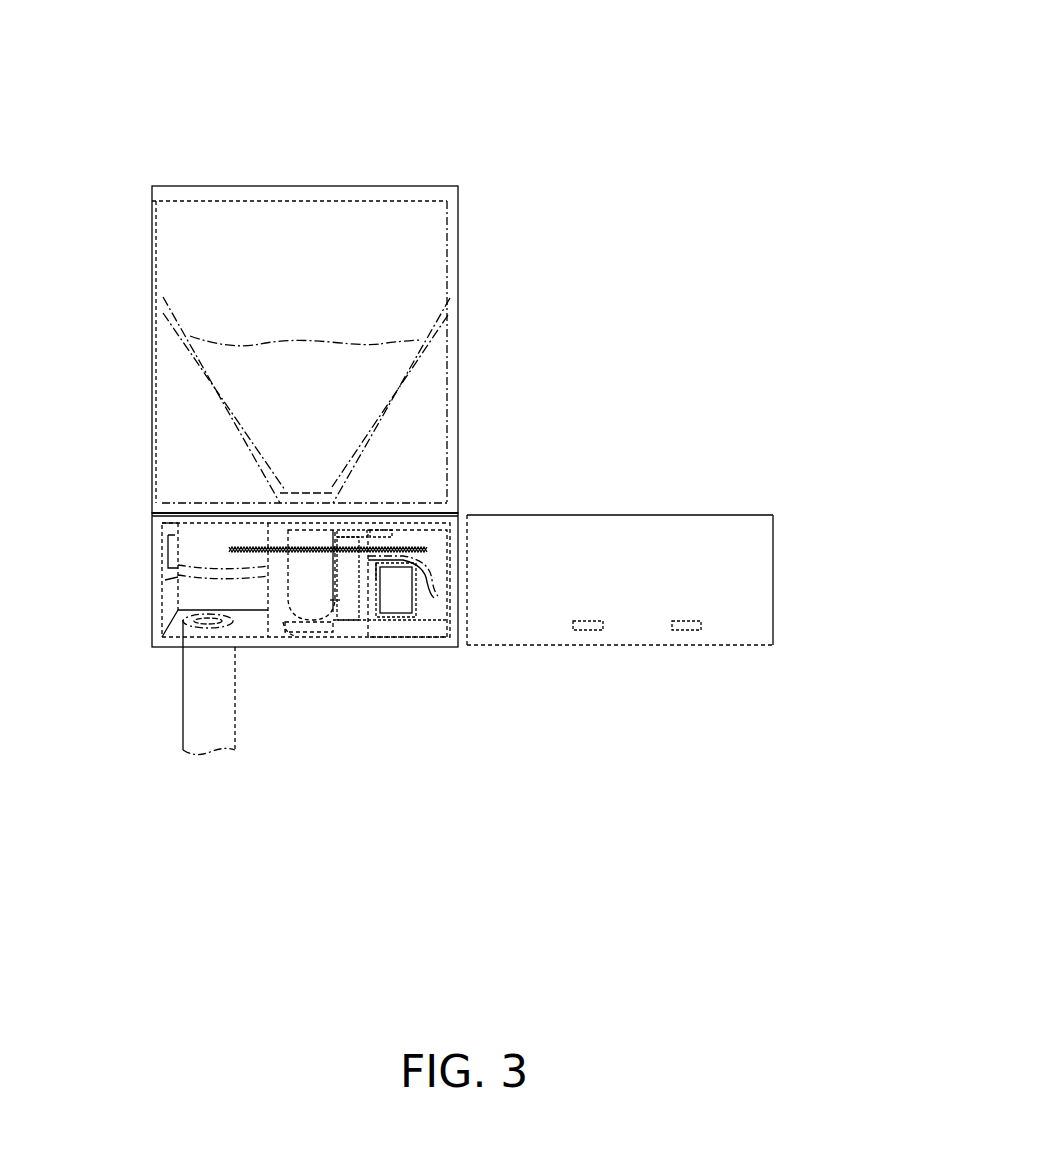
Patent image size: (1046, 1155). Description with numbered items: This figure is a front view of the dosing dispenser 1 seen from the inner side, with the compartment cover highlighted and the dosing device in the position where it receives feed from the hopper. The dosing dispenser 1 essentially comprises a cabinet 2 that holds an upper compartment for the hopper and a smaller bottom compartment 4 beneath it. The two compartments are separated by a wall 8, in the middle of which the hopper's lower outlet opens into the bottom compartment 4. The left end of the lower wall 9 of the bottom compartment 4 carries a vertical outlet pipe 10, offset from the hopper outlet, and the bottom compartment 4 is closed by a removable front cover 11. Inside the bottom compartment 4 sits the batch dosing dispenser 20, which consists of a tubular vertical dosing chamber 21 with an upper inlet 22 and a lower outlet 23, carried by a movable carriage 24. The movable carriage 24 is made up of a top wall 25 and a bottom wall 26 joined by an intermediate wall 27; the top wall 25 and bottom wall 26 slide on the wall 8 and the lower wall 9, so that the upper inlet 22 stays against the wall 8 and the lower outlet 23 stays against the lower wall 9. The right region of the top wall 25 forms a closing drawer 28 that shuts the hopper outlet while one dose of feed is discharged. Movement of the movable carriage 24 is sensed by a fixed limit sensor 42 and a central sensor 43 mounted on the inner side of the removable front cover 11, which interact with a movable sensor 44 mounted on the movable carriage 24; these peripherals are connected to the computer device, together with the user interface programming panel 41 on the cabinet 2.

The dosing dispenser 1 is at (569, 107).
The cabinet 2 is at (464, 278).
The bottom compartment 4 is at (202, 545).
The wall 8 is at (220, 515).
The lower wall 9 is at (167, 632).
The vertical outlet pipe 10 is at (200, 697).
The removable front cover 11 is at (741, 623).
The batch dosing dispenser 20 is at (744, 470).
The dosing chamber 21 is at (322, 596).
The upper inlet 22 is at (298, 523).
The lower outlet 23 is at (295, 638).
The movable carriage 24 is at (750, 338).
The top wall 25 is at (332, 528).
The bottom wall 26 is at (437, 626).
The intermediate wall 27 is at (275, 538).
The closing drawer 28 is at (403, 530).
The user interface programming panel 41 is at (168, 552).
The fixed limit sensor 42 is at (686, 632).
The central sensor 43 is at (587, 632).
The movable sensor 44 is at (338, 601).